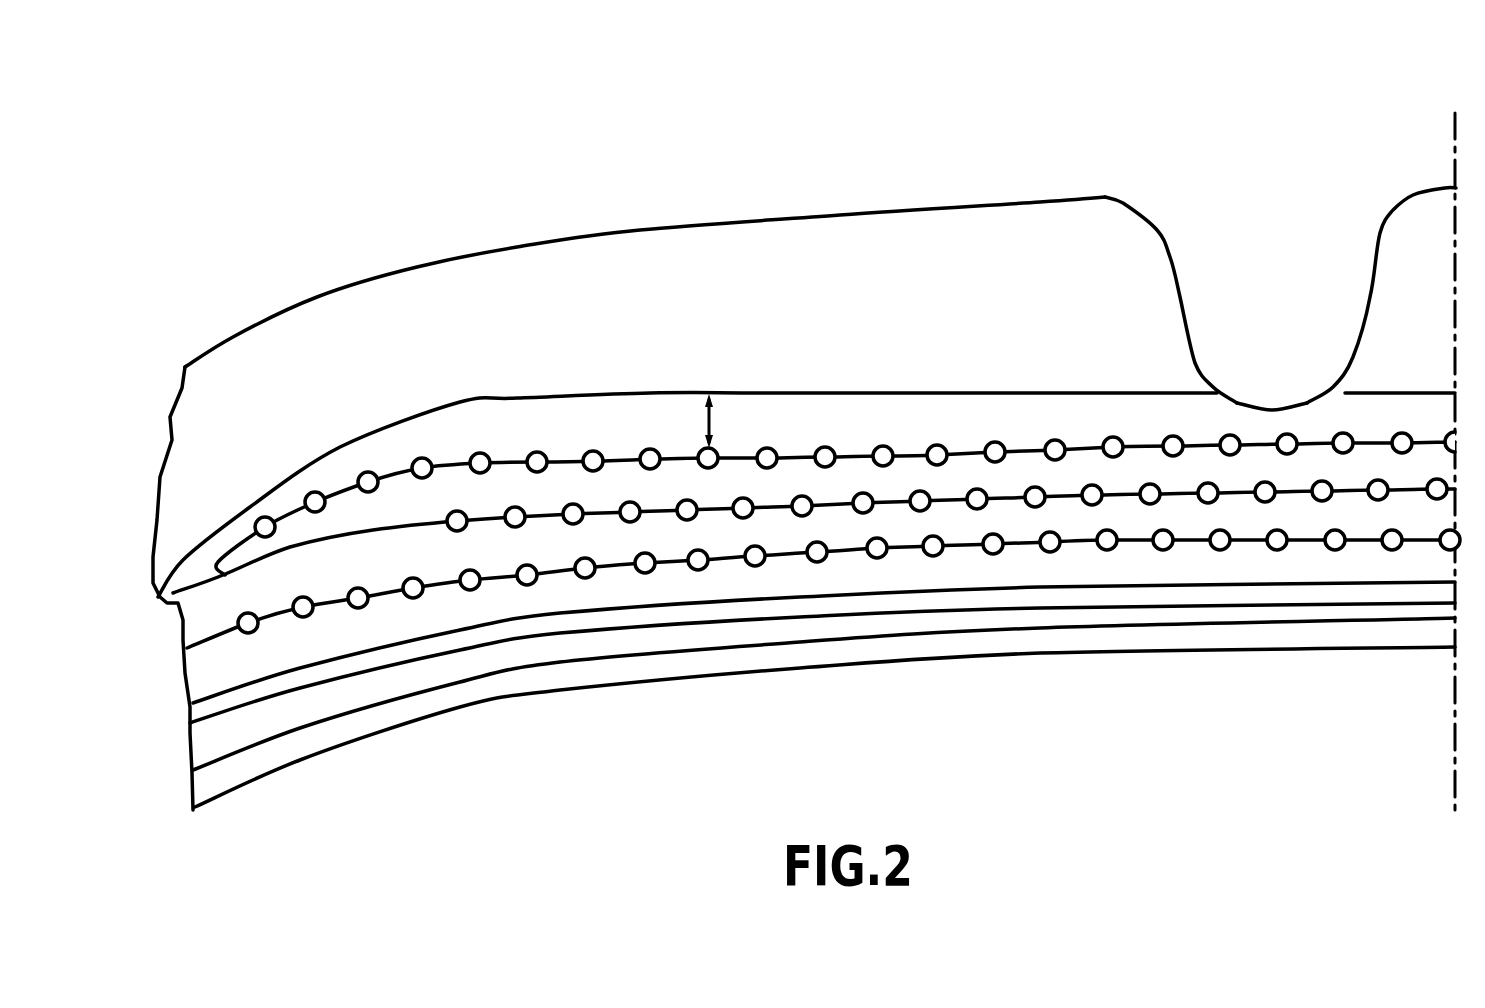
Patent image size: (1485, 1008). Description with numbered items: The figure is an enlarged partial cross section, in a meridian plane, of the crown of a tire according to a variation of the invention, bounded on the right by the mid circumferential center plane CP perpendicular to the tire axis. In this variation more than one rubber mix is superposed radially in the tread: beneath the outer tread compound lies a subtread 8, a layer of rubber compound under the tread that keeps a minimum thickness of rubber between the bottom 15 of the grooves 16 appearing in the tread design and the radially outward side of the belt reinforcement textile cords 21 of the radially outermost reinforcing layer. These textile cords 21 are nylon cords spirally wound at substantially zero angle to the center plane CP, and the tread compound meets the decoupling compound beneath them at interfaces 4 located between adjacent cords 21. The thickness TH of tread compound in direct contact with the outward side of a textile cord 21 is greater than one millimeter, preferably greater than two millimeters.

The interfaces 4 is at (927, 465).
The subtread 8 is at (1013, 415).
The bottom of groove 15 is at (1272, 403).
The groove 16 is at (1245, 255).
The textile cord 21 is at (708, 458).
The thickness of tread compound TH is at (697, 423).
The mid circumferential center plane CP is at (1454, 443).